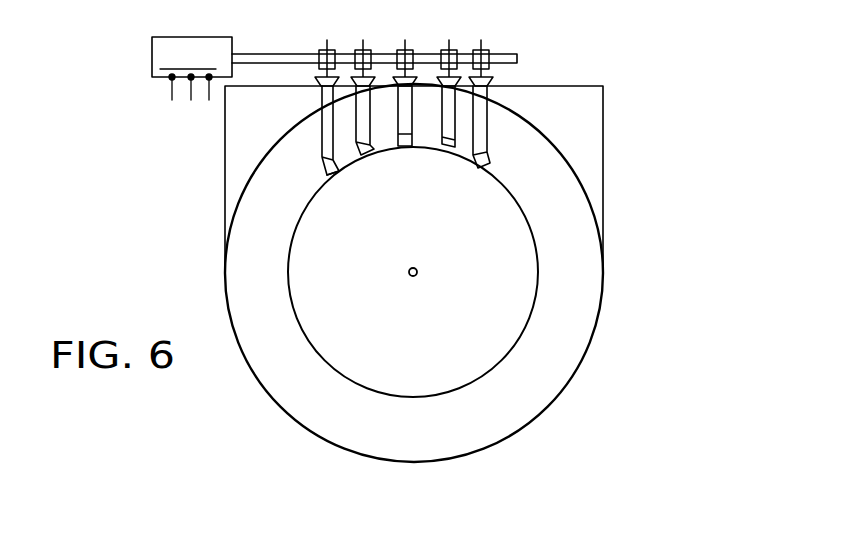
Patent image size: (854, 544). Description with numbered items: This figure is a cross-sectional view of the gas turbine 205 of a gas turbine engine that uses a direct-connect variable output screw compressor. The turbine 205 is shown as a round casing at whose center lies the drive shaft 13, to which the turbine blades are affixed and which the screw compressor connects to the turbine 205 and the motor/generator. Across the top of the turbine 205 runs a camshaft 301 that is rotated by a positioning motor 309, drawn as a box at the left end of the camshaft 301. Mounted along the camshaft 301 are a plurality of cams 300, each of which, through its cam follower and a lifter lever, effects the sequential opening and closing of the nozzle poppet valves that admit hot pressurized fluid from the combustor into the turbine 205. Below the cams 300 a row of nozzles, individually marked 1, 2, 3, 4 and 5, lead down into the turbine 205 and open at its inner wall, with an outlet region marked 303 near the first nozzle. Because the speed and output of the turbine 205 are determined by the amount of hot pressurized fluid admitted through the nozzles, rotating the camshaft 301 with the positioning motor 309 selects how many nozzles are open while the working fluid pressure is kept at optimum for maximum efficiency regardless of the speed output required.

The first tube 1 is at (333, 177).
The second tube 2 is at (368, 157).
The third tube 3 is at (407, 147).
The fourth tube 4 is at (447, 149).
The fifth tube 5 is at (478, 170).
The drive shaft 13 is at (417, 277).
The gas turbine 205 is at (578, 154).
The cams 300 is at (405, 40).
The camshaft 301 is at (262, 53).
The tube outlet 303 is at (341, 180).
The positioning motor 309 is at (192, 68).